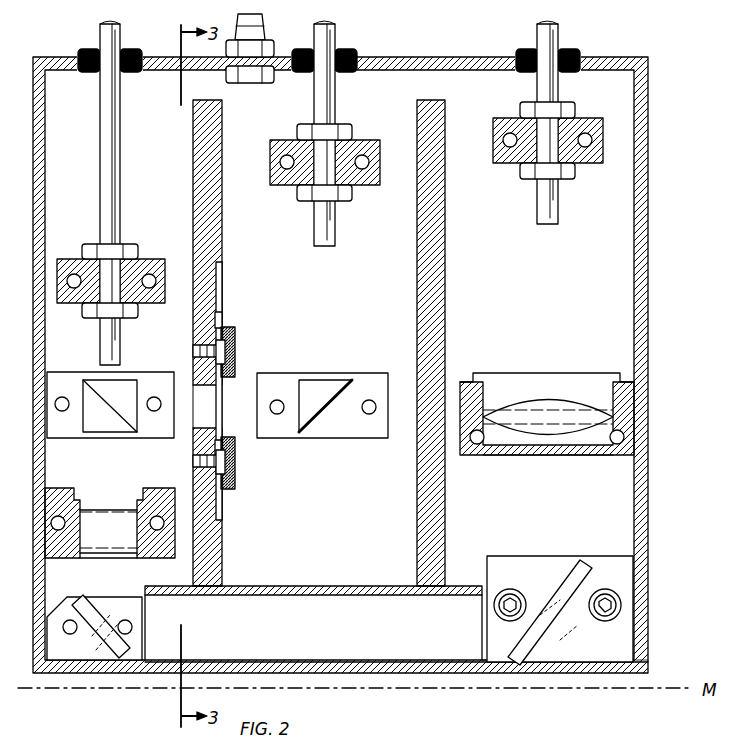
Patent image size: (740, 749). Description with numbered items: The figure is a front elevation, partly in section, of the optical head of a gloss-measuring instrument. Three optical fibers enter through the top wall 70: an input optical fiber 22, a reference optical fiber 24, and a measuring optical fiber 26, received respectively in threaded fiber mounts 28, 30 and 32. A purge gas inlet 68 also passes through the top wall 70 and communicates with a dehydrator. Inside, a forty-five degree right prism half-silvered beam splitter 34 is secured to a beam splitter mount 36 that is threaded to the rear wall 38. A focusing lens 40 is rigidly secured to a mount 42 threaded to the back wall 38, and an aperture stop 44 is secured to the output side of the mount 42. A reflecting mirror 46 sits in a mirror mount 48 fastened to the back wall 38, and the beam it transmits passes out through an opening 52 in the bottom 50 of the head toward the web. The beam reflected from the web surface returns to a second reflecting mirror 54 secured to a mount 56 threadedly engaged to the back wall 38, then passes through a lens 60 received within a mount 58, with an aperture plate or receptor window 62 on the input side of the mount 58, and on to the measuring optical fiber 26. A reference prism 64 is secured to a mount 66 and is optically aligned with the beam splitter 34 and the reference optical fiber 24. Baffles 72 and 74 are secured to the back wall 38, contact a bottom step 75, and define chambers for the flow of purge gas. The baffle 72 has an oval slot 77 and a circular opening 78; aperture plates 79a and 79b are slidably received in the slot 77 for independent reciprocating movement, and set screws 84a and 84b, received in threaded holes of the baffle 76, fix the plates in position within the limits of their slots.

The input optical fiber 22 is at (100, 34).
The reference optical fiber 24 is at (335, 42).
The measuring optical fiber 26 is at (537, 42).
The threaded fiber mount 28 is at (153, 258).
The threaded fiber mount 30 is at (373, 138).
The threaded fiber mount 32 is at (590, 118).
The half-silvered beam splitter 34 is at (110, 406).
The beam splitter mount 36 is at (110, 405).
The rear wall 38 is at (309, 529).
The focusing lens 40 is at (132, 518).
The mount 42 is at (162, 492).
The aperture stop 44 is at (110, 570).
The reflecting mirror 46 is at (122, 660).
The mirror mount 48 is at (88, 660).
The bottom 50 is at (492, 673).
The opening 52 is at (410, 665).
The reflecting mirror 54 is at (547, 627).
The mount 56 is at (608, 560).
The mount 58 is at (635, 400).
The lens 60 is at (565, 400).
The aperture plate or receptor window 62 is at (610, 458).
The reference prism 64 is at (340, 383).
The mount 66 is at (376, 438).
The purge gas inlet 68 is at (262, 30).
The top wall 70 is at (440, 58).
The baffle 72 is at (182, 162).
The baffle 74 is at (446, 275).
The bottom step 75 is at (338, 586).
The baffle 76 is at (222, 242).
The oval slot 77 is at (222, 287).
The circular opening 78 is at (190, 395).
The aperture plate 79a is at (222, 318).
The aperture plate 79b is at (222, 432).
The set screw 84a is at (235, 350).
The set screw 84b is at (236, 477).